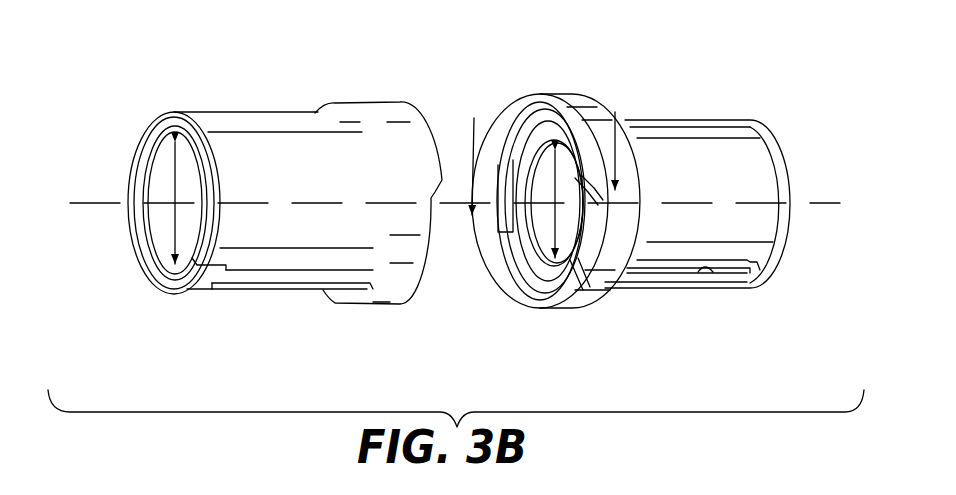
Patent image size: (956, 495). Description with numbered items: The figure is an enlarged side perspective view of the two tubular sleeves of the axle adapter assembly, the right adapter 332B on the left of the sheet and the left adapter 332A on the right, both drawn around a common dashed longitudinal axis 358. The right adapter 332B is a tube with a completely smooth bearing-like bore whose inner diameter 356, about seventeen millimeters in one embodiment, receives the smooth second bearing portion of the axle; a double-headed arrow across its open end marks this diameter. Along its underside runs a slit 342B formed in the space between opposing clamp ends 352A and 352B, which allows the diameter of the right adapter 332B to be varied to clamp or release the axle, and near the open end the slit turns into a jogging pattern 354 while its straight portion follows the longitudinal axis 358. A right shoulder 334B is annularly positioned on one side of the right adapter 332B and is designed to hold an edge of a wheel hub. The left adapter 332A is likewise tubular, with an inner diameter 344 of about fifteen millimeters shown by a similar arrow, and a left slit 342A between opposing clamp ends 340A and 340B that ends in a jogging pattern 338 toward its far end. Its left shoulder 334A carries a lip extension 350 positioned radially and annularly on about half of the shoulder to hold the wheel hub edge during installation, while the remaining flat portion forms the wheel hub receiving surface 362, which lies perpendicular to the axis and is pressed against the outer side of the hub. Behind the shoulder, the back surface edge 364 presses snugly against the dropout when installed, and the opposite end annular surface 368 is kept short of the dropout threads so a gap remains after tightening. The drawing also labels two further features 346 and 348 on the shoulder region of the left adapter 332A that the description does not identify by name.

The right adapter 332B is at (257, 61).
The left adapter 332A is at (739, 95).
The right shoulder 334B is at (400, 83).
The left shoulder 334A is at (597, 82).
The inner diameter 356 is at (173, 176).
The longitudinal axis 358 is at (108, 202).
The jogging pattern 354 is at (218, 298).
The clamp end 352B is at (316, 276).
The clamp end 352A is at (283, 293).
The slit 342B is at (245, 291).
The lip extension 350 is at (515, 123).
The ring flange 346 is at (513, 168).
The ring gap 348 is at (470, 183).
The inner diameter 344 is at (548, 295).
The wheel hub receiving surface 362 is at (535, 300).
The back surface edge 364 is at (629, 112).
The end annular surface 368 is at (790, 191).
The jogging pattern 338 is at (777, 295).
The left slit 342A is at (643, 275).
The clamp end 340A is at (678, 270).
The clamp end 340B is at (688, 278).